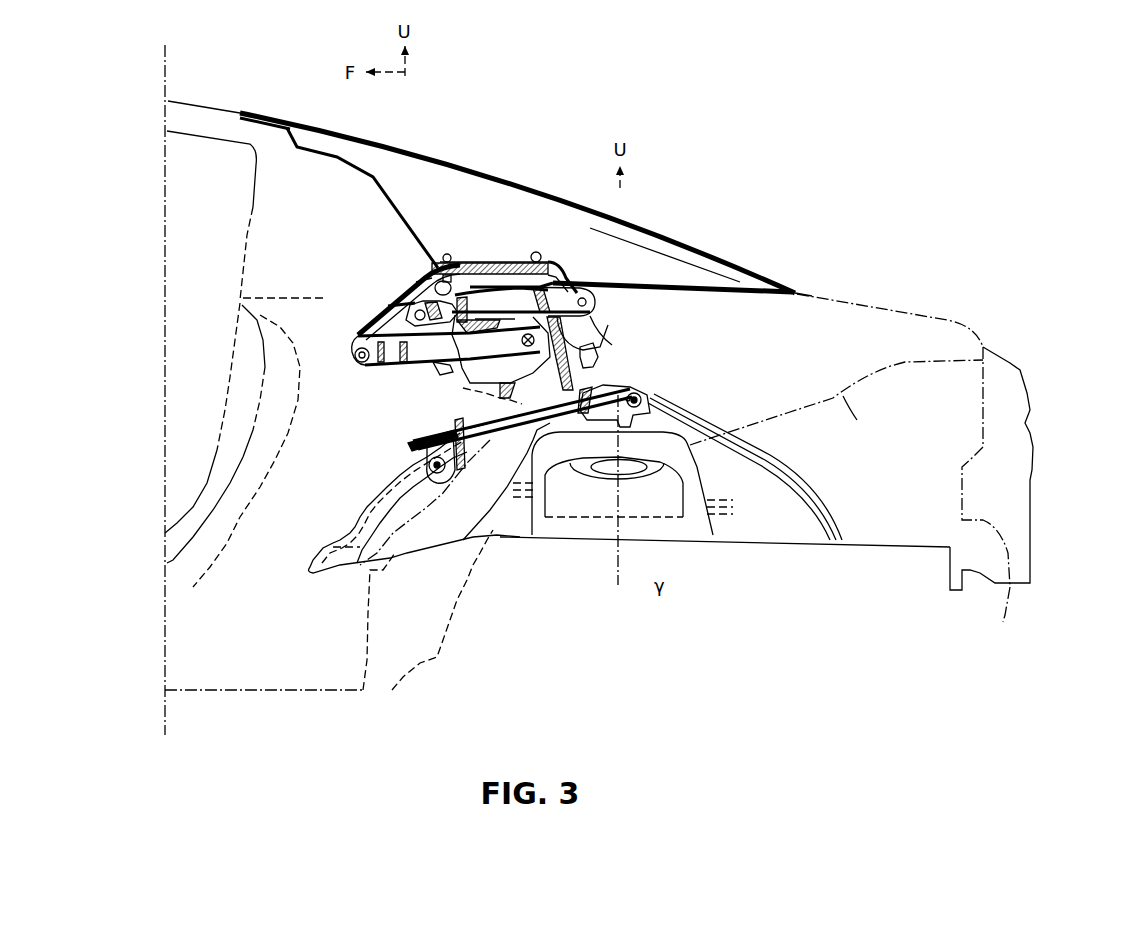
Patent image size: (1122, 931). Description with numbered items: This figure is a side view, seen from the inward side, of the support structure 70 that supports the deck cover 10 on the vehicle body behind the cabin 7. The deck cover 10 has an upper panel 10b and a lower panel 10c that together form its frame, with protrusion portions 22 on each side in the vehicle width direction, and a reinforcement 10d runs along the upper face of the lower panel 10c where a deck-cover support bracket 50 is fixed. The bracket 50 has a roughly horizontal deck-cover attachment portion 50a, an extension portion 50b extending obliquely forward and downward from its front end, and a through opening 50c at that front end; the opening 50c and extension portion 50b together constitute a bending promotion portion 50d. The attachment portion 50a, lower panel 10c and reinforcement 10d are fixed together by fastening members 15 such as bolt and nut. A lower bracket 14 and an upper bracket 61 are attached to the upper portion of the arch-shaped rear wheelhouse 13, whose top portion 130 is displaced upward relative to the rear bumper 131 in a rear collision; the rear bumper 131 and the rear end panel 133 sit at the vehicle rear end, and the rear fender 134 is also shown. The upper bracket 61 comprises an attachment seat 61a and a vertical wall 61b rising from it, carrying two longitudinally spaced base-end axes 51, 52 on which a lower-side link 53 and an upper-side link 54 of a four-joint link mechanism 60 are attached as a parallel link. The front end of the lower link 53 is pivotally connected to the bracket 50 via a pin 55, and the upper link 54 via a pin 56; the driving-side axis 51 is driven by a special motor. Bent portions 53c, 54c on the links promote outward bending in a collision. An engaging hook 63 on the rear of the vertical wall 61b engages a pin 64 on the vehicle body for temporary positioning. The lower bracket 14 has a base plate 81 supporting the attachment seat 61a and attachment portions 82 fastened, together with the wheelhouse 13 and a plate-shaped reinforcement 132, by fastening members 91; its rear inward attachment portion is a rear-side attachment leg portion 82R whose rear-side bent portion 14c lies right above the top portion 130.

The cabin 7 is at (199, 247).
The deck cover 10 is at (432, 151).
The upper panel 10b is at (652, 228).
The lower panel 10c is at (702, 284).
The reinforcement 10d is at (470, 260).
The rear wheelhouse 13 is at (377, 485).
The lower bracket 14 is at (481, 433).
The rear-side bent portion 14c is at (643, 392).
The fastening member 15 is at (448, 254).
The protrusion portion 22 is at (509, 184).
The deck-cover support bracket 50 is at (424, 274).
The deck-cover attachment portion 50a is at (511, 264).
The extension portion 50b is at (404, 296).
The through opening 50c is at (420, 282).
The bending promotion portion 50d is at (333, 288).
The base-end axis 51 is at (501, 359).
The base-end axis 52 is at (590, 300).
The lower-side link 53 is at (452, 378).
The bent portion 53c is at (392, 370).
The upper-side link 54 is at (546, 276).
The bent portion 54c is at (522, 340).
The pin 55 is at (354, 352).
The pin 56 is at (408, 306).
The four-joint link mechanism 60 is at (489, 270).
The upper bracket 61 is at (460, 405).
The attachment seat 61a is at (597, 392).
The vertical wall 61b is at (524, 380).
The engaging hook 63 is at (600, 362).
The pin 64 is at (598, 346).
The support structure 70 is at (670, 336).
The base plate 81 is at (467, 445).
The attachment portion 82 is at (448, 475).
The rear-side attachment leg portion 82R is at (655, 401).
The fastening member 91 is at (646, 398).
The top portion 130 is at (614, 428).
The rear bumper 131 is at (1030, 515).
The reinforcement 132 is at (490, 505).
The rear end panel 133 is at (1005, 614).
The rear fender 134 is at (860, 421).